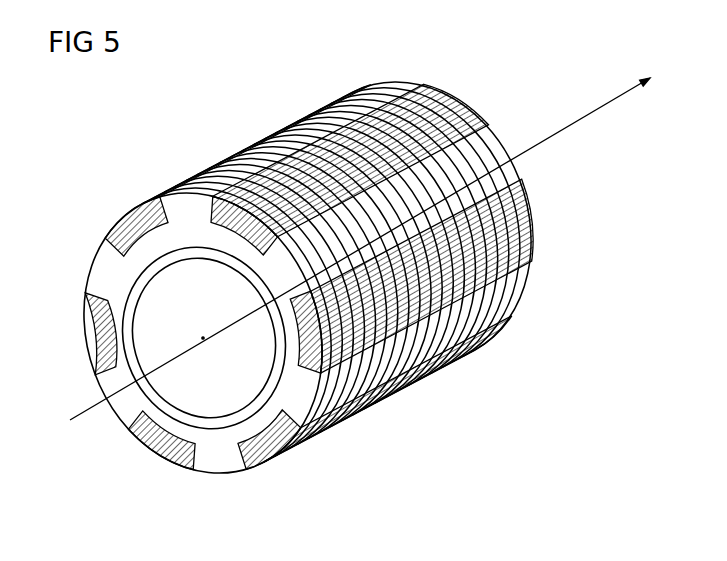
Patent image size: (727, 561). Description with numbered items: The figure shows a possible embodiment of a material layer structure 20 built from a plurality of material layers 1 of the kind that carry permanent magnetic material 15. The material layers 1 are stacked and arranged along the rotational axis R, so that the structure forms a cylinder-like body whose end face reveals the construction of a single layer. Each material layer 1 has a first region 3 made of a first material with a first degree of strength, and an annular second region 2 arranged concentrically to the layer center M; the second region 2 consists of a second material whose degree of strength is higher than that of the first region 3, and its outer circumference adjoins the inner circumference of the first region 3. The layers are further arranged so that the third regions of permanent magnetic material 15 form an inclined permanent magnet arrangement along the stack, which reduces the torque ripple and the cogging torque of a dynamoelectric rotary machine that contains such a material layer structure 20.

The material layer 1 is at (263, 177).
The second region 2 is at (133, 283).
The first region 3 is at (214, 462).
The permanent magnetic material 15 is at (84, 327).
The material layer structure 20 is at (498, 363).
The rotational axis R is at (590, 110).
The layer center M is at (203, 337).